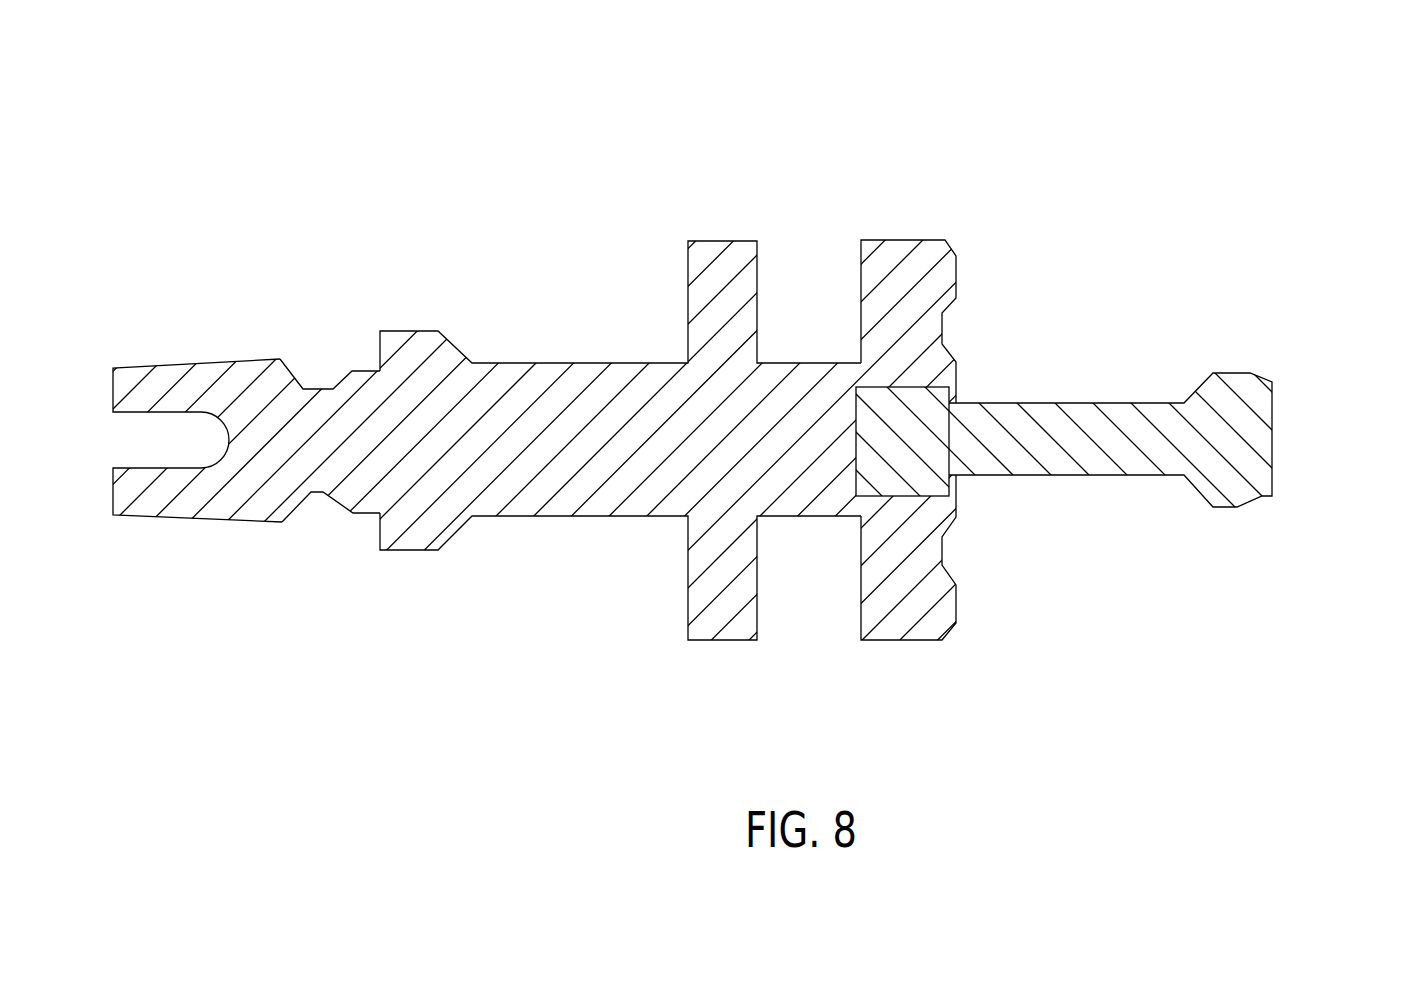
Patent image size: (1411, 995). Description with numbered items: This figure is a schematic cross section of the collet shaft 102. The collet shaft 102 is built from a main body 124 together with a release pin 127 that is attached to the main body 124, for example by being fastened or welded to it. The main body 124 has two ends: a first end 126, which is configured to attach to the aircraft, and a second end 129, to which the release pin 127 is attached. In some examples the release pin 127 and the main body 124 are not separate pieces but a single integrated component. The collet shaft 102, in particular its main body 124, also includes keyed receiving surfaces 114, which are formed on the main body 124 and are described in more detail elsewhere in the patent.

The collet shaft 102 is at (700, 348).
The keyed receiving surfaces 114 is at (333, 381).
The main body 124 is at (590, 394).
The first end 126 is at (232, 390).
The release pin 127 is at (1081, 447).
The second end 129 is at (921, 269).